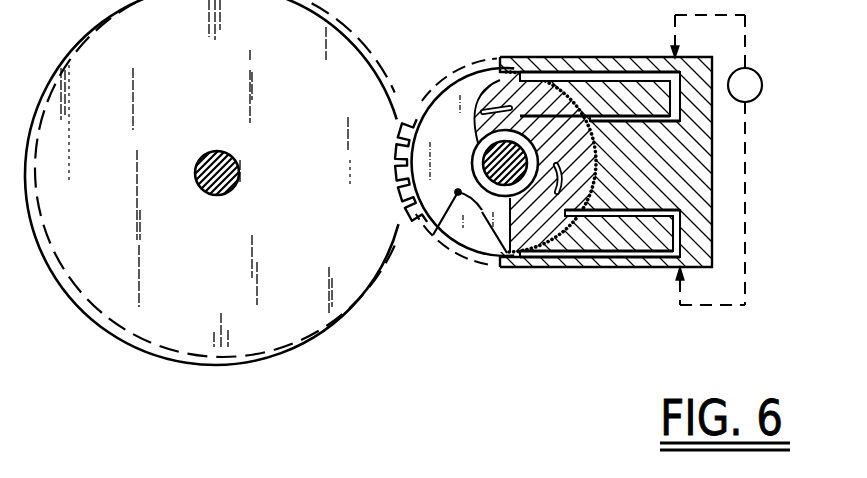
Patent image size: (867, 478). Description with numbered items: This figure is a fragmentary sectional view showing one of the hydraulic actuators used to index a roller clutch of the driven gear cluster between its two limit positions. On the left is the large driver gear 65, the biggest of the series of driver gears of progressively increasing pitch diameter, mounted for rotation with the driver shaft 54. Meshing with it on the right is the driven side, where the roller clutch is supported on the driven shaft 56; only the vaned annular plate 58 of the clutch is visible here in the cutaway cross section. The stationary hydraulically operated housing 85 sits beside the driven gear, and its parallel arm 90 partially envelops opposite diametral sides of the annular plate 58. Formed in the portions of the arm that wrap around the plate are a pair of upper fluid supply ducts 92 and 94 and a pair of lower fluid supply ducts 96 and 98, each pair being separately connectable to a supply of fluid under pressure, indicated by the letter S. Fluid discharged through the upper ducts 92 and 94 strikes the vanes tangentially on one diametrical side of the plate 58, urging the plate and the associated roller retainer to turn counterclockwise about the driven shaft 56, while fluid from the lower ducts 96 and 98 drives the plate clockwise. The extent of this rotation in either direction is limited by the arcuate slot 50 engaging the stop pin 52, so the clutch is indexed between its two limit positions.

The driver gear 65 is at (190, 105).
The driver shaft 54 is at (201, 192).
The arcuate slot 50 is at (506, 258).
The driven shaft 56 is at (477, 155).
The stop pin 52 is at (447, 229).
The vaned annular plate 58 is at (461, 230).
The hydraulically operated housing 85 is at (687, 172).
The parallel arm 90 is at (637, 57).
The upper fluid supply duct 92 is at (581, 76).
The upper fluid supply duct 94 is at (628, 112).
The lower fluid supply duct 96 is at (603, 217).
The lower fluid supply duct 98 is at (645, 250).